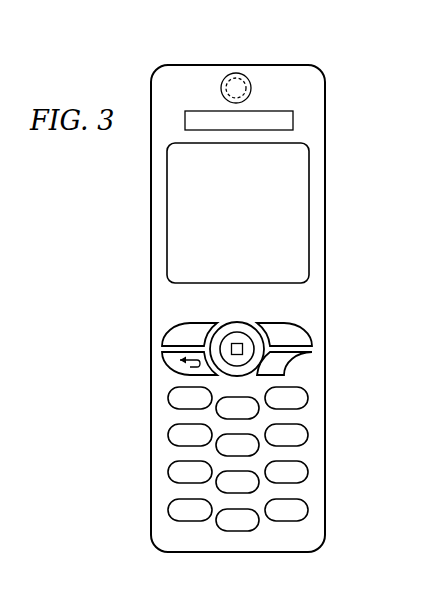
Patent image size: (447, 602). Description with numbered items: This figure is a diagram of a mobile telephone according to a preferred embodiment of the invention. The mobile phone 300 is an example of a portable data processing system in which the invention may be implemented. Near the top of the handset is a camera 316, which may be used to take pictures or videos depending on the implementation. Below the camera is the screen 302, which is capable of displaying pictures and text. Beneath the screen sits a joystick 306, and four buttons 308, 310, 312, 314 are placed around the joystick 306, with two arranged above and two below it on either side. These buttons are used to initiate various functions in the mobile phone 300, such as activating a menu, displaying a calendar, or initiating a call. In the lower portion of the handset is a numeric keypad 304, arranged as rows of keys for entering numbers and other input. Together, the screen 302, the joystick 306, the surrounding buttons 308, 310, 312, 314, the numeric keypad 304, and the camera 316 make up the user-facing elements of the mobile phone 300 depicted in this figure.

The mobile phone 300 is at (108, 215).
The screen 302 is at (255, 226).
The numeric keypad 304 is at (146, 390).
The joystick 306 is at (240, 338).
The button 308 is at (166, 333).
The button 310 is at (308, 333).
The button 312 is at (166, 365).
The button 314 is at (308, 365).
The camera 316 is at (236, 73).